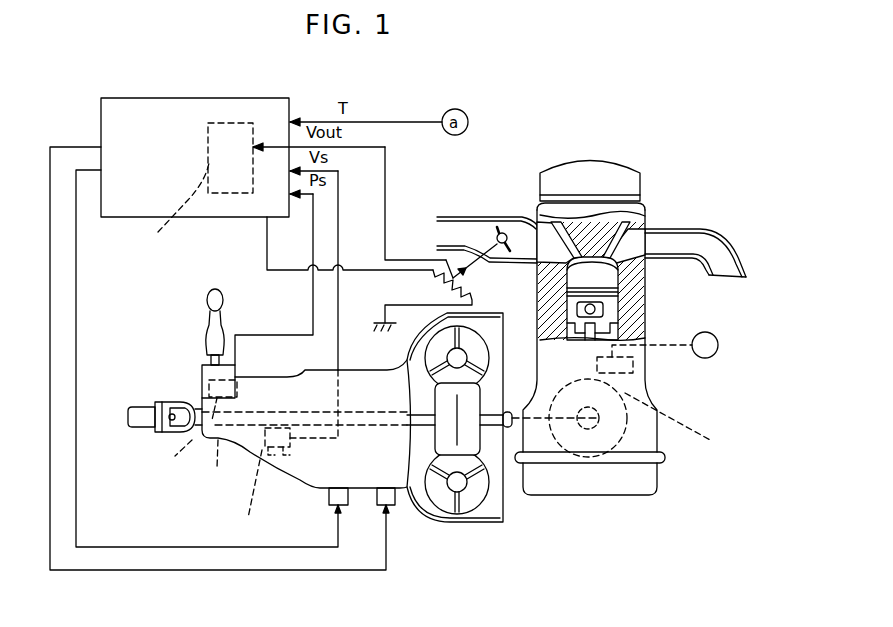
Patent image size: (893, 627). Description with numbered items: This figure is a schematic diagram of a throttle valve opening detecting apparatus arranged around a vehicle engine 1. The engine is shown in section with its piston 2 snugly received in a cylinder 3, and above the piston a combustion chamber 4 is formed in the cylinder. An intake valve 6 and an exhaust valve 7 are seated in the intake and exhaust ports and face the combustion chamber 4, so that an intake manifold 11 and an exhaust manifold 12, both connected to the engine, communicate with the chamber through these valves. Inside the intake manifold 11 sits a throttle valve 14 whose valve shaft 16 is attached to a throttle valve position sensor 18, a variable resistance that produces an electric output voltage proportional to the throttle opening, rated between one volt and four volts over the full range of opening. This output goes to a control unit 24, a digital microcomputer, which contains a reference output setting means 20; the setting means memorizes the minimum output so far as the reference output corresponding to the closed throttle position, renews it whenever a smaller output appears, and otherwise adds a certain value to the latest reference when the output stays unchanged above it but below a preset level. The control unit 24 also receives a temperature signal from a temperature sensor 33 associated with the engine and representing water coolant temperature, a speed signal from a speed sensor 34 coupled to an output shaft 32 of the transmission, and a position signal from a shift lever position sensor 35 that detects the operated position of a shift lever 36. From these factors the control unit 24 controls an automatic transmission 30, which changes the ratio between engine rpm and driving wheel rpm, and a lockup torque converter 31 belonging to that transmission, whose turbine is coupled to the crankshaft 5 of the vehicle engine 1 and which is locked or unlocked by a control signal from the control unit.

The vehicle engine 1 is at (598, 301).
The piston 2 is at (605, 310).
The cylinder 3 is at (610, 268).
The combustion chamber 4 is at (537, 295).
The crankshaft 5 is at (545, 416).
The intake valve 6 is at (553, 222).
The exhaust valve 7 is at (630, 222).
The intake manifold 11 is at (446, 217).
The exhaust manifold 12 is at (730, 230).
The throttle valve 14 is at (506, 252).
The valve shaft 16 is at (498, 234).
The throttle valve position sensor 18 is at (418, 287).
The reference output setting means 20 is at (231, 196).
The control unit 24 is at (218, 98).
The automatic transmission 30 is at (375, 478).
The lockup torque converter 31 is at (483, 508).
The output shaft 32 is at (161, 483).
The temperature sensor 33 is at (633, 377).
The speed sensor 34 is at (277, 452).
The shift lever position sensor 35 is at (209, 385).
The shift lever 36 is at (207, 300).